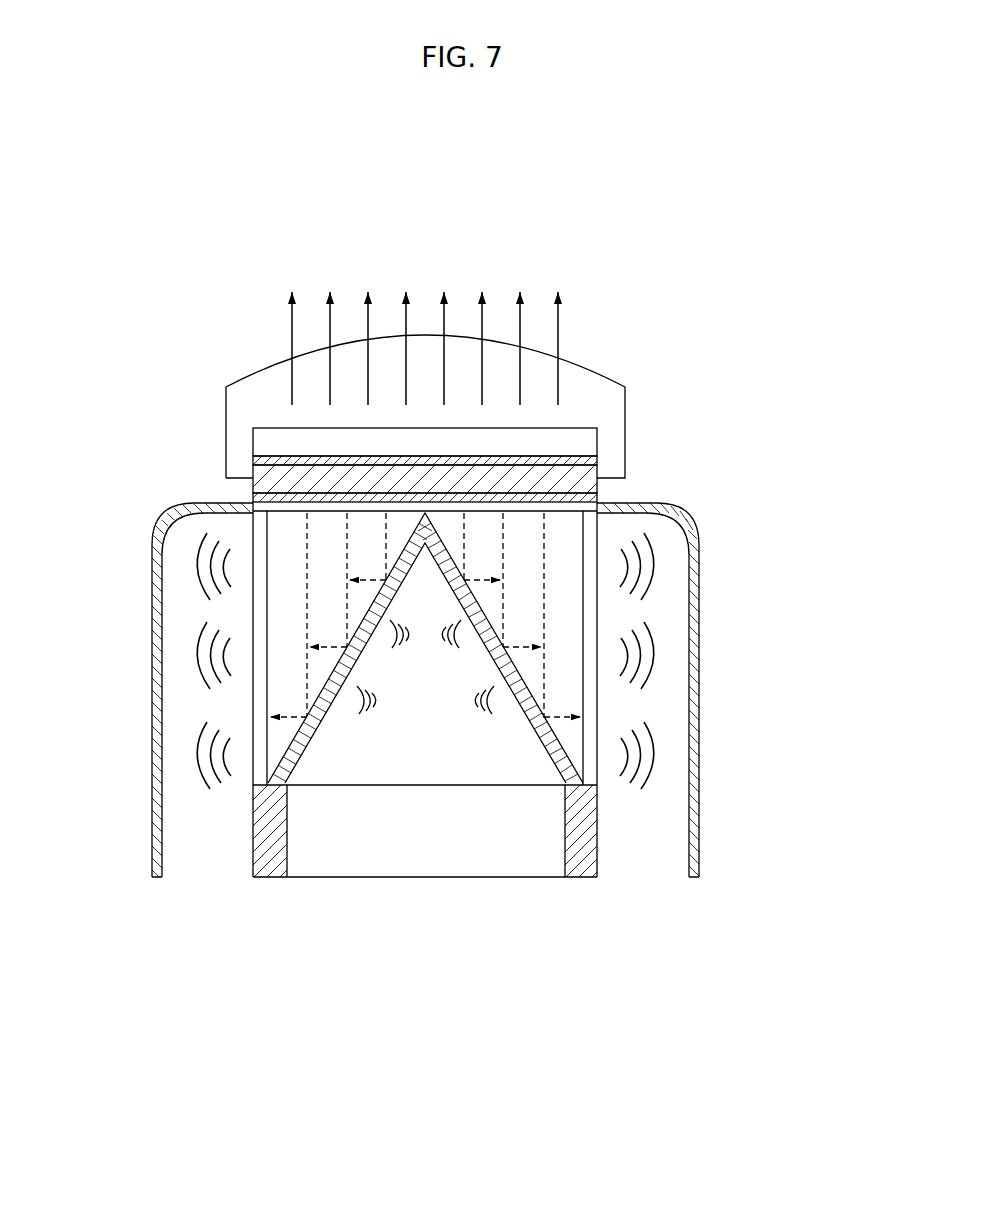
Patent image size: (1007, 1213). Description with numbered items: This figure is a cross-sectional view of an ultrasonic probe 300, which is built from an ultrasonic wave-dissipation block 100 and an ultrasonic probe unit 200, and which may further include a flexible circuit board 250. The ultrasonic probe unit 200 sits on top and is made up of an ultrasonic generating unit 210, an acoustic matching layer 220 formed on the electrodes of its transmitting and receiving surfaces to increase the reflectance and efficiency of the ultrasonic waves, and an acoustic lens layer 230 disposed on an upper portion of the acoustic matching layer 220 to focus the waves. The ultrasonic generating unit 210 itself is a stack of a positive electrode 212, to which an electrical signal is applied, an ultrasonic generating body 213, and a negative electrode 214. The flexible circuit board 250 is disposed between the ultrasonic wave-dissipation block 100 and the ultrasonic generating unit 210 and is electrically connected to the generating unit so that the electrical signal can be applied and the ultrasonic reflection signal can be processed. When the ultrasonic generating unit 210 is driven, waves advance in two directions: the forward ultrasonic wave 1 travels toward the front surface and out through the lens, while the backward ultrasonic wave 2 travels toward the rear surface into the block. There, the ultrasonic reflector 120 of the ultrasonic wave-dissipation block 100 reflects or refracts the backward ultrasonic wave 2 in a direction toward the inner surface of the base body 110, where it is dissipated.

The forward ultrasonic wave 1 is at (558, 333).
The backward ultrasonic wave 2 is at (307, 615).
The ultrasonic wave-dissipation block 100 is at (489, 762).
The base body 110 is at (265, 872).
The ultrasonic reflector 120 is at (535, 733).
The ultrasonic probe unit 200 is at (472, 360).
The ultrasonic generating unit 210 is at (472, 430).
The positive electrode 212 is at (597, 462).
The ultrasonic generating body 213 is at (597, 485).
The negative electrode 214 is at (602, 497).
The acoustic matching layer 220 is at (271, 437).
The acoustic lens layer 230 is at (257, 393).
The flexible circuit board 250 is at (714, 723).
The ultrasonic probe 300 is at (648, 200).